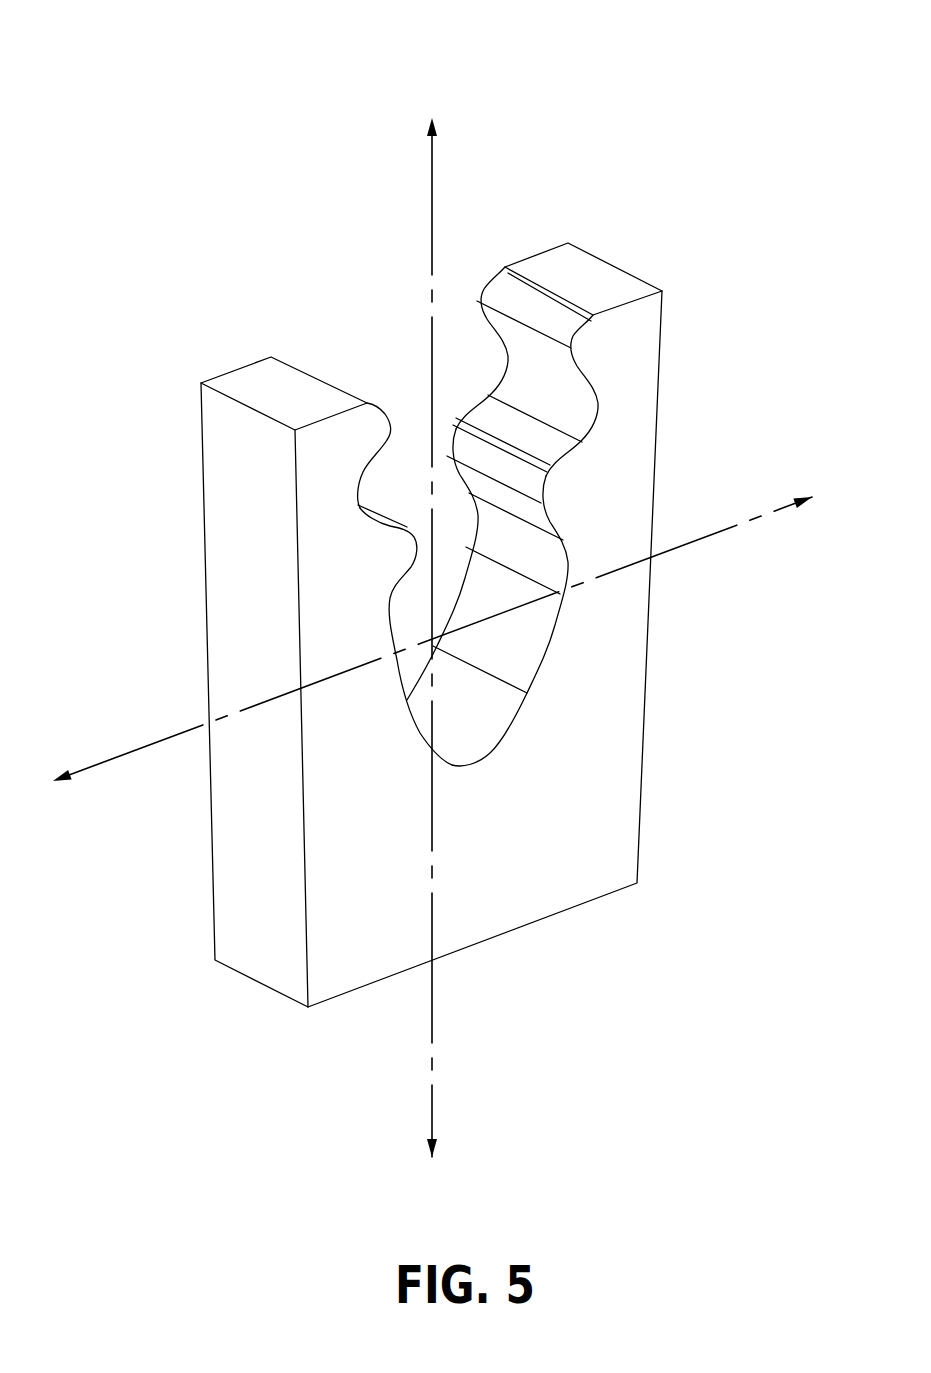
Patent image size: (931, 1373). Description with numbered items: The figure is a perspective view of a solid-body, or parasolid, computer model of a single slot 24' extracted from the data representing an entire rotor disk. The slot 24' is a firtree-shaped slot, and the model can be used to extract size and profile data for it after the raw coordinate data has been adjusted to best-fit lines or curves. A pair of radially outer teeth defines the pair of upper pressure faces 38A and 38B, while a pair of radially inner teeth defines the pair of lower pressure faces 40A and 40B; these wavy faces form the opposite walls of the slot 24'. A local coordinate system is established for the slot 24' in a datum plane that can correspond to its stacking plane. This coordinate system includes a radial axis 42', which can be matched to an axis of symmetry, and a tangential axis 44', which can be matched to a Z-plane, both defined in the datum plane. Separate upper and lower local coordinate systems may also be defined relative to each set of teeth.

The slot 24' is at (435, 503).
The upper pressure face 38A is at (375, 445).
The upper pressure face 38B is at (556, 366).
The lower pressure face 40A is at (406, 578).
The lower pressure face 40B is at (548, 515).
The radial axis 42' is at (481, 637).
The tangential axis 44' is at (432, 639).